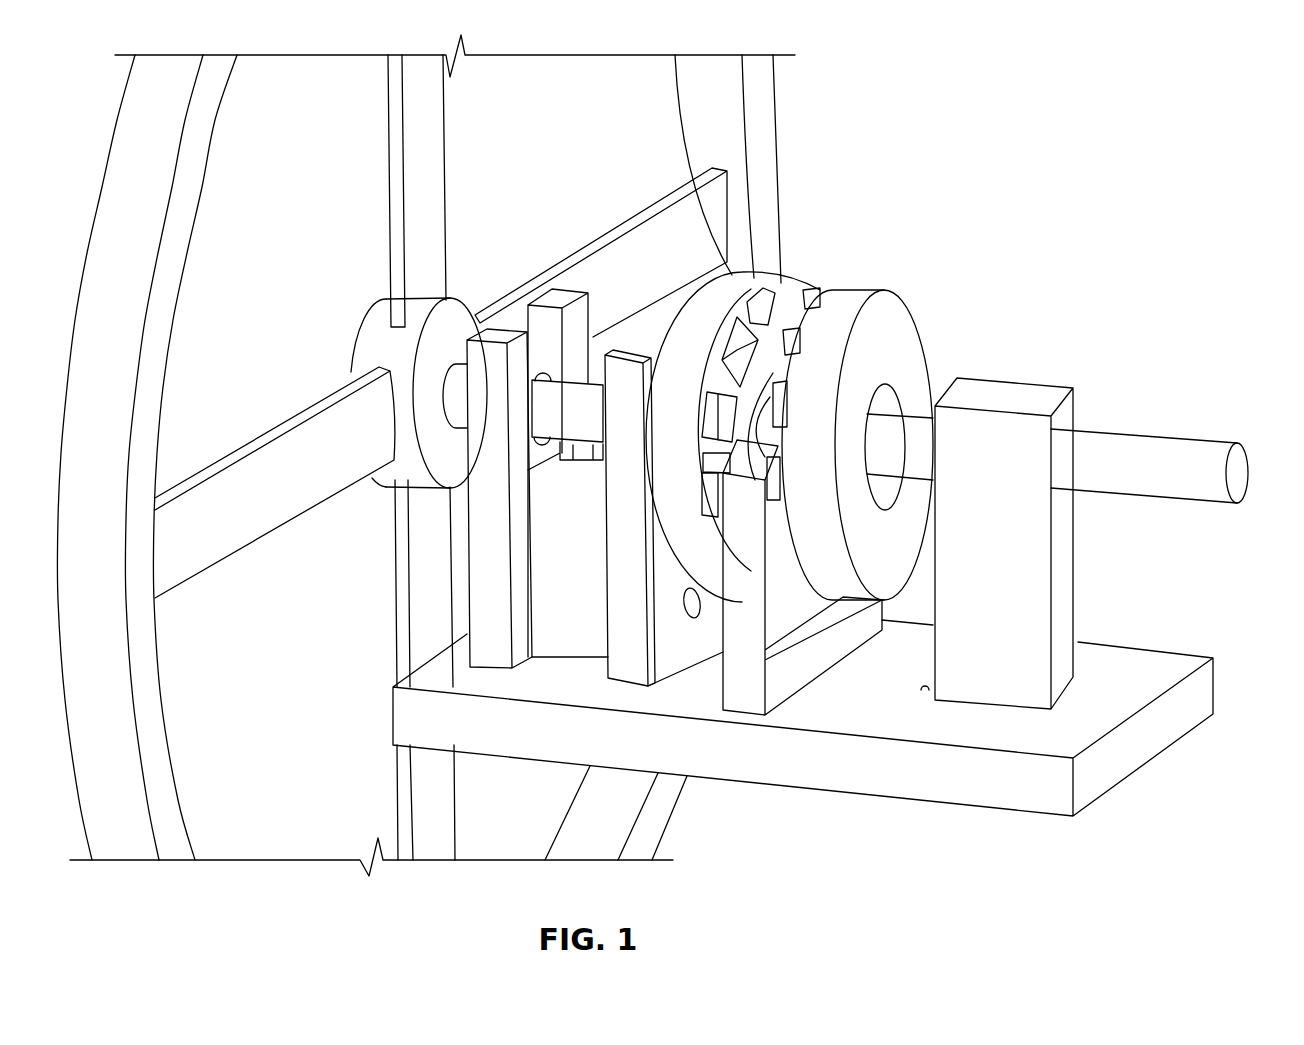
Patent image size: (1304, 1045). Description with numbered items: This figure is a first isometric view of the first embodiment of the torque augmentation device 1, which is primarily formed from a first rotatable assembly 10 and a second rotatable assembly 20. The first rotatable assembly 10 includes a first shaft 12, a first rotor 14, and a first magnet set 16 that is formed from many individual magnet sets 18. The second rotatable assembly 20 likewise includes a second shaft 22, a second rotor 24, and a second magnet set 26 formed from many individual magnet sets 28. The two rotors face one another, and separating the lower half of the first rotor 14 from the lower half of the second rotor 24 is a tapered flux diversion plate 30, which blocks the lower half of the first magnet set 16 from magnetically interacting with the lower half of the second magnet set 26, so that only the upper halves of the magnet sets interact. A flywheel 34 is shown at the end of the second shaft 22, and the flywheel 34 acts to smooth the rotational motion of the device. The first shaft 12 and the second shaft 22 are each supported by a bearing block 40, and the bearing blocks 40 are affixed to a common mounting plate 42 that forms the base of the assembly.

The torque augmentation device 1 is at (1135, 50).
The first rotatable assembly 10 is at (912, 270).
The first shaft 12 is at (1130, 481).
The first rotor 14 is at (797, 426).
The first magnet set 16 is at (786, 348).
The individual magnet sets 18 is at (773, 478).
The second rotatable assembly 20 is at (783, 333).
The second shaft 22 is at (552, 427).
The second rotor 24 is at (659, 427).
The second magnet set 26 is at (730, 340).
The individual magnet sets 28 is at (707, 427).
The tapered flux diversion plate 30 is at (730, 649).
The flywheel 34 is at (699, 130).
The bearing block 40 is at (614, 619).
The mounting plate 42 is at (975, 793).